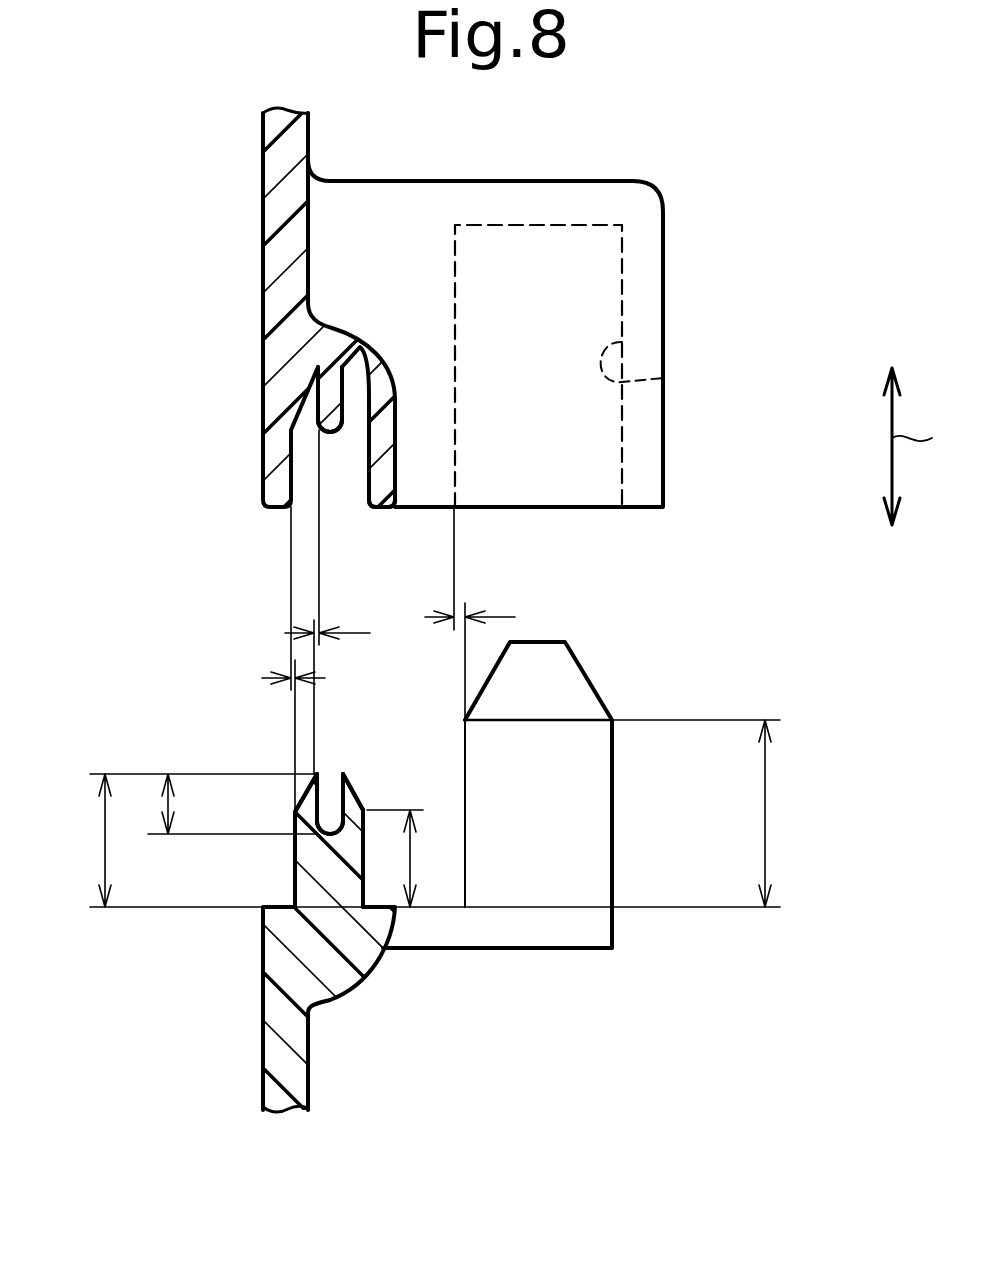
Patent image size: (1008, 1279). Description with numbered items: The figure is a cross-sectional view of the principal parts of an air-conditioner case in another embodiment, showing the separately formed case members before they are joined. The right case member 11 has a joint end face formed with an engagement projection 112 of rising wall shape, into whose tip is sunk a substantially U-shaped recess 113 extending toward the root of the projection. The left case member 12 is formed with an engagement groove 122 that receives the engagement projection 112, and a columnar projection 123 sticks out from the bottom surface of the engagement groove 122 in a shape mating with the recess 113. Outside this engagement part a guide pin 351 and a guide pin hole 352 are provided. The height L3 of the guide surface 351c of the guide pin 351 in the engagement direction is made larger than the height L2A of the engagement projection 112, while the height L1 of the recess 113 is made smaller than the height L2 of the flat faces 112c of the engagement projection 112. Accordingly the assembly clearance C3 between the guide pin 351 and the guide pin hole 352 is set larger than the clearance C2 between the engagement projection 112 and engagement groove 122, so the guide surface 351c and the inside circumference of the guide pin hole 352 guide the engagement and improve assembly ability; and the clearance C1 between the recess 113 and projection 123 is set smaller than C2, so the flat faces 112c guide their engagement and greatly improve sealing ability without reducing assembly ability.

The right case member 11 is at (280, 1053).
The left case member 12 is at (282, 203).
The engagement projection 112 is at (312, 868).
The flat faces (guide surfaces) of the engagement projection 112c is at (297, 892).
The recess 113 is at (331, 778).
The engagement groove 122 is at (362, 458).
The projection 123 is at (330, 400).
The guide pin 351 is at (585, 773).
The guide surface of the guide pin 351c is at (612, 826).
The guide pin hole 352 is at (663, 378).
The height of the recess L1 is at (148, 804).
The height of the flat faces of the engagement projection L2 is at (426, 858).
The height of the engagement projection L2A is at (76, 840).
The height of the guide surface of the guide pin L3 is at (785, 813).
The assembly clearance dimension of the recess and the projection C1 is at (334, 602).
The assembly clearance dimension between the engagement projection and engagement gr C2 is at (272, 659).
The assembly clearance dimension of the guide pin and the guide pin hole C3 is at (477, 613).